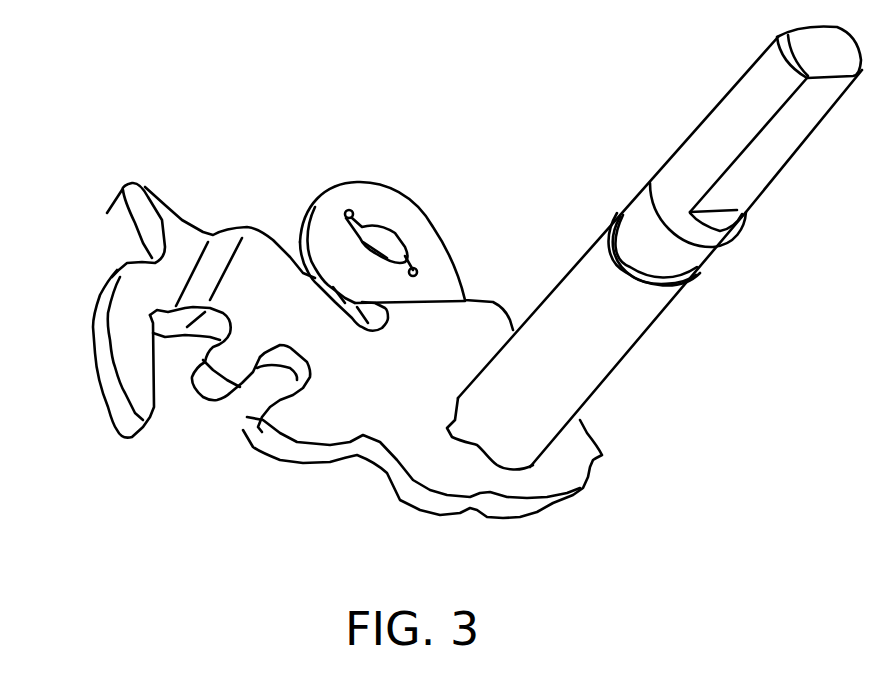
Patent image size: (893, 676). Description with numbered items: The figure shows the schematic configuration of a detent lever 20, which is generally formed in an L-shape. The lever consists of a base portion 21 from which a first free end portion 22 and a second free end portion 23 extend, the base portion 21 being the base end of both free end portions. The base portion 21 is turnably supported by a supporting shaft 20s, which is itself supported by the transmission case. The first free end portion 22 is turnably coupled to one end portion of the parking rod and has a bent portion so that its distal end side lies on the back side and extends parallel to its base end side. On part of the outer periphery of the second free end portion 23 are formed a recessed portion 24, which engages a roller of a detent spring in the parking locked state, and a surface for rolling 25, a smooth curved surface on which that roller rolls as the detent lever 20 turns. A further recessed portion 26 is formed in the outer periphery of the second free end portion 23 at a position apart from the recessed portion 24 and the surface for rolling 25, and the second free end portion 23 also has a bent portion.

The detent lever 20 is at (440, 272).
The supporting shaft 20s is at (586, 394).
The base portion 21 is at (577, 446).
The first free end portion 22 is at (440, 278).
The second free end portion 23 is at (250, 250).
The recessed portion 24 is at (152, 247).
The surface for rolling 25 is at (97, 302).
The recessed portion 26 is at (290, 365).